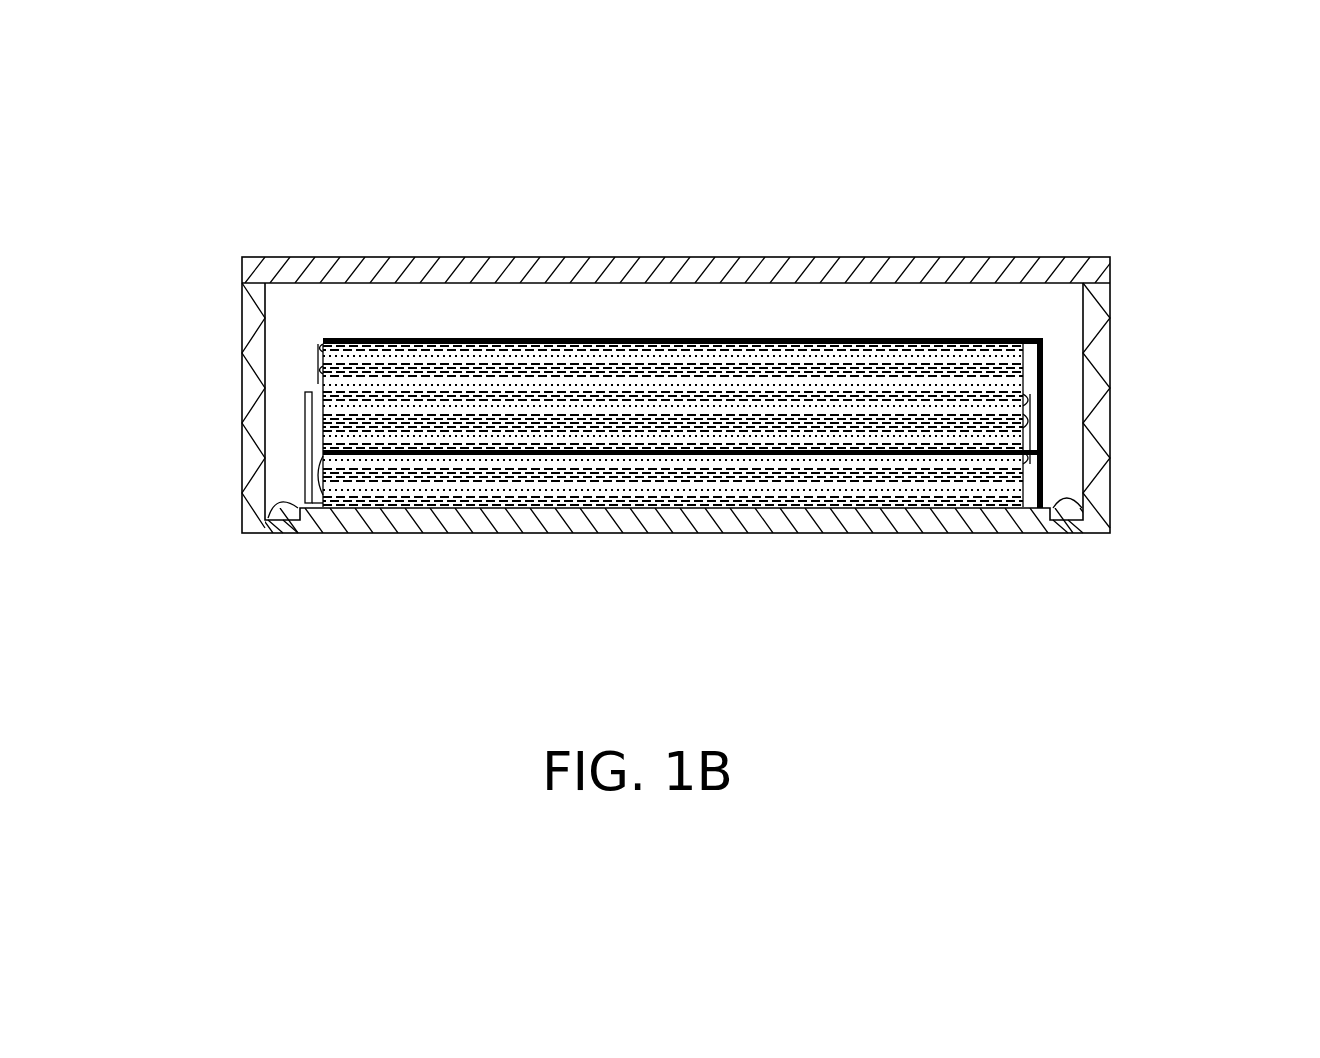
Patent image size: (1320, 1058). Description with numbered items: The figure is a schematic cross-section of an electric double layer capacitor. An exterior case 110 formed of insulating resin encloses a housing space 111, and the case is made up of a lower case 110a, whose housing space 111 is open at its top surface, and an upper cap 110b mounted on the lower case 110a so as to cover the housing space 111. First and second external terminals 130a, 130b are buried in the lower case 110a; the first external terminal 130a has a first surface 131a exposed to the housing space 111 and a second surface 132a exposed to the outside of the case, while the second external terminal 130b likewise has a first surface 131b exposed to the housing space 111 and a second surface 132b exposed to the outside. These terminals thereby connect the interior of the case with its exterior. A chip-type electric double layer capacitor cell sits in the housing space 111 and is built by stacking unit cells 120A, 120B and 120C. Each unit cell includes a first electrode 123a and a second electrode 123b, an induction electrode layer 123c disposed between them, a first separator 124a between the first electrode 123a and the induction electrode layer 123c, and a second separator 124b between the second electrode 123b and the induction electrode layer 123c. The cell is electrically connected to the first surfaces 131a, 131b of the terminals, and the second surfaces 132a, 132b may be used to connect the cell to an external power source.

The exterior case 110 is at (1212, 250).
The lower case 110a is at (1100, 322).
The upper cap 110b is at (1103, 270).
The housing space 111 is at (980, 315).
The unit cell 120A is at (130, 290).
The unit cell 120B is at (1212, 360).
The unit cell 120C is at (300, 505).
The first electrode 123a is at (320, 347).
The second electrode 123b is at (300, 490).
The induction electrode layer 123c is at (320, 380).
The first separator 124a is at (320, 370).
The second separator 124b is at (305, 393).
The first external terminal 130a is at (1183, 630).
The second external terminal 130b is at (325, 630).
The first surface of first external terminal 131a is at (1097, 527).
The first surface of second external terminal 131b is at (250, 531).
The second surface of first external terminal 132a is at (1062, 533).
The second surface of second external terminal 132b is at (288, 533).